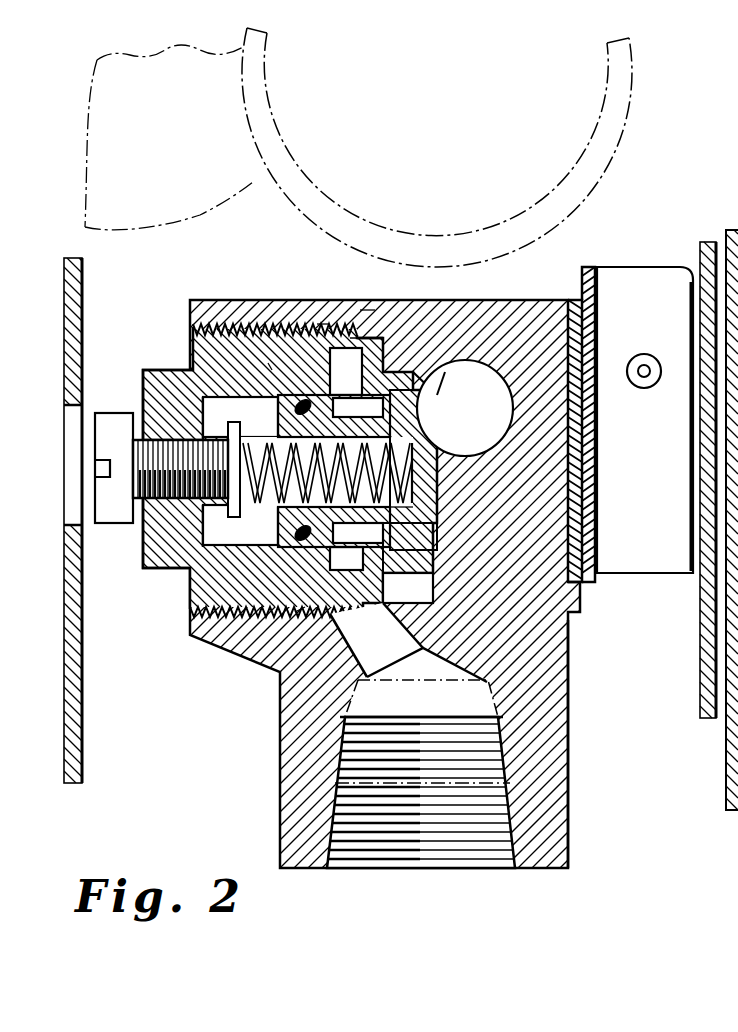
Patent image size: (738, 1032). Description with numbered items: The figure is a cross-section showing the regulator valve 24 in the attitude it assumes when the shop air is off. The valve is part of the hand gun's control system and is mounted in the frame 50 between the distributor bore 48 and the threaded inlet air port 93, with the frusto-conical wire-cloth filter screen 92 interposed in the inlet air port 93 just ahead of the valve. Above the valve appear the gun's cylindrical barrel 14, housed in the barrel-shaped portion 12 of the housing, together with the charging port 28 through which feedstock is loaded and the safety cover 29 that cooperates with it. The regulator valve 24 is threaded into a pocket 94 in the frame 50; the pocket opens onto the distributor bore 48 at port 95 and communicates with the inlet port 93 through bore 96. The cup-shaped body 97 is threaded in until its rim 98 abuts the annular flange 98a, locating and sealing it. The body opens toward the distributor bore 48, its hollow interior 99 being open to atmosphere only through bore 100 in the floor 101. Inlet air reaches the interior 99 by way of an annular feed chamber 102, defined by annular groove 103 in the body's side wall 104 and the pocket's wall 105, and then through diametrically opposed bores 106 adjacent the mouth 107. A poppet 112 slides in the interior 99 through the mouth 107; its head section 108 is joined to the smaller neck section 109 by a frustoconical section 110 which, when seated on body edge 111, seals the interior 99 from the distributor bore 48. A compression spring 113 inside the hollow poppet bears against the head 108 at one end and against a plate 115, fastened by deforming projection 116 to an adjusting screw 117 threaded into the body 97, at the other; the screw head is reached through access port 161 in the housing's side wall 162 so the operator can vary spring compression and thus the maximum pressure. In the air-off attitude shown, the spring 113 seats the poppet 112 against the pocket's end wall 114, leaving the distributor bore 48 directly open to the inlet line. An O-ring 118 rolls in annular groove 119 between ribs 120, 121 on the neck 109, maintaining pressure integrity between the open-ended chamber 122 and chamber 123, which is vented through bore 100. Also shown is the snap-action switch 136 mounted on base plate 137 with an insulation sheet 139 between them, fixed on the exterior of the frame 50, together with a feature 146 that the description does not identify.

The barrel-shaped portion 12 is at (708, 240).
The cylindrical barrel 14 is at (630, 103).
The regulator valve 24 is at (142, 636).
The charging port 28 is at (275, 168).
The safety cover 29 is at (140, 240).
The distributor bore 48 is at (493, 382).
The frame 50 is at (560, 656).
The filter screen 92 is at (507, 737).
The inlet air port 93 is at (460, 853).
The pocket 94 is at (323, 324).
The port 95 is at (462, 392).
The bore 96 is at (397, 640).
The body 97 is at (243, 355).
The rim 98 is at (433, 561).
The annular flange 98a is at (436, 584).
The hollow interior 99 is at (232, 403).
The bore 100 is at (193, 562).
The floor 101 is at (160, 530).
The annular feed chamber 102 is at (400, 333).
The annular groove 103 is at (270, 365).
The side wall 104 is at (253, 580).
The pocket wall 105 is at (368, 310).
The diametrically opposed bores 106 is at (355, 338).
The mouth 107 is at (390, 395).
The head section 108 is at (427, 488).
The neck section 109 is at (310, 513).
The frustoconical section 110 is at (427, 415).
The body edge 111 is at (403, 403).
The poppet 112 is at (430, 524).
The compression spring 113 is at (413, 470).
The end wall 114 is at (400, 512).
The plate 115 is at (210, 536).
The deforming projection 116 is at (257, 445).
The adjusting screw 117 is at (107, 435).
The O-ring 118 is at (298, 613).
The annular groove 119 is at (348, 559).
The rib 120 is at (275, 319).
The rib 121 is at (347, 371).
The open ended chamber 122 is at (372, 540).
The chamber 123 is at (217, 415).
The switch 136 is at (650, 292).
The base plate 137 is at (578, 608).
The insulation sheet 139 is at (594, 584).
The hole 146 is at (648, 366).
The access port 161 is at (96, 506).
The side wall 162 is at (72, 760).